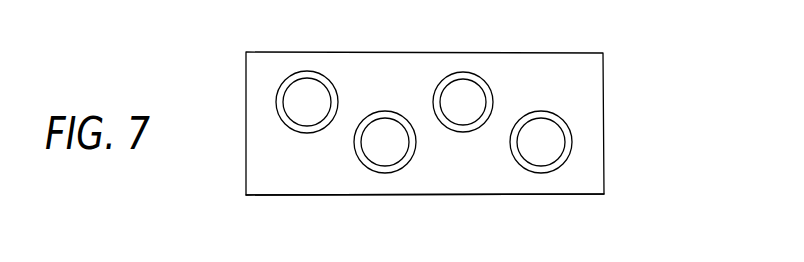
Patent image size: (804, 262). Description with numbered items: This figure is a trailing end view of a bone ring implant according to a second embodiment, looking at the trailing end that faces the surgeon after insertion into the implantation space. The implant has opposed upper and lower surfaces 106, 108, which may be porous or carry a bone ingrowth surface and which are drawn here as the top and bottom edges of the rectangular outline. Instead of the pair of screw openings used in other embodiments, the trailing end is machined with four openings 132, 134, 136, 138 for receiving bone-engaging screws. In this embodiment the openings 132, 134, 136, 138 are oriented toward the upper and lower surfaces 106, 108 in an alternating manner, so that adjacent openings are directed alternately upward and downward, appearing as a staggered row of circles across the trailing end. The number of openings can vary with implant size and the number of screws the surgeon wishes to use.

The upper surface 106 is at (518, 52).
The lower surface 108 is at (348, 197).
The opening 132 is at (314, 109).
The opening 134 is at (384, 140).
The opening 136 is at (463, 110).
The opening 138 is at (540, 142).